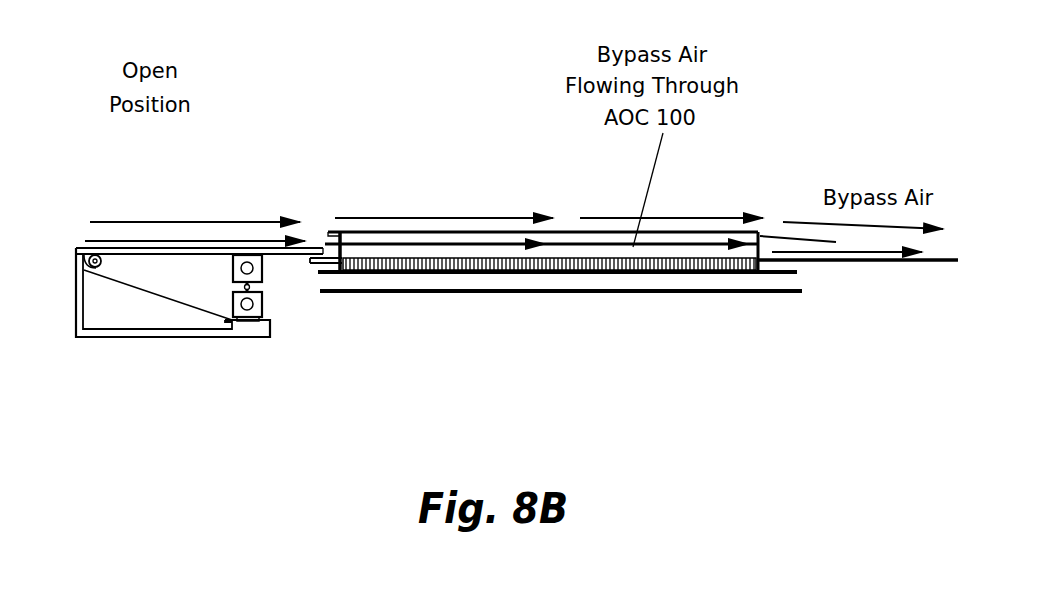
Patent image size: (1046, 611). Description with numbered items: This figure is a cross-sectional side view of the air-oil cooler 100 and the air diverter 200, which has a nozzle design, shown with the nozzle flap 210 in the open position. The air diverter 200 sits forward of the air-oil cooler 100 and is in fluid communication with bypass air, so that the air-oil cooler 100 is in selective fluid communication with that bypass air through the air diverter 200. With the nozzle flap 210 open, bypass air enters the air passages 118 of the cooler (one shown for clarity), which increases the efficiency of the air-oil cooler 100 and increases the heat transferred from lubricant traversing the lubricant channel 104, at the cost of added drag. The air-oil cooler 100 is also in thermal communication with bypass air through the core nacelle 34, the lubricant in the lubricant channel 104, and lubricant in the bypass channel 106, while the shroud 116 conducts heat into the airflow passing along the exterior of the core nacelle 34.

The core nacelle 34 is at (877, 268).
The air-oil cooler 100 is at (627, 332).
The lubricant channel 104 is at (535, 262).
The bypass channel 106 is at (696, 283).
The shroud 116 is at (562, 230).
The air passages 118 is at (413, 264).
The air diverter 200 is at (200, 350).
The nozzle flap 210 is at (168, 248).